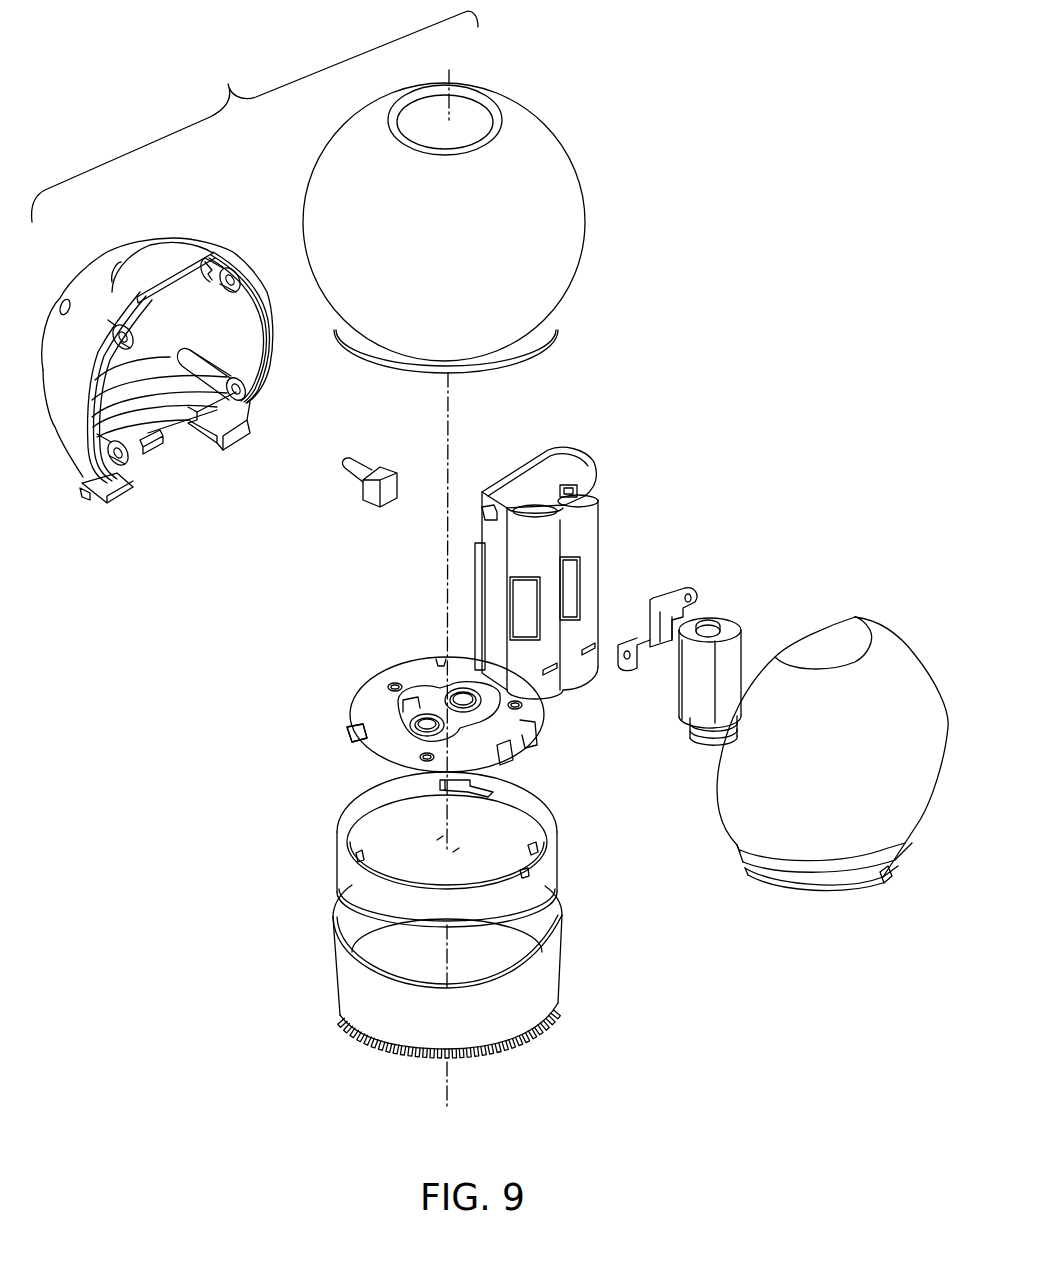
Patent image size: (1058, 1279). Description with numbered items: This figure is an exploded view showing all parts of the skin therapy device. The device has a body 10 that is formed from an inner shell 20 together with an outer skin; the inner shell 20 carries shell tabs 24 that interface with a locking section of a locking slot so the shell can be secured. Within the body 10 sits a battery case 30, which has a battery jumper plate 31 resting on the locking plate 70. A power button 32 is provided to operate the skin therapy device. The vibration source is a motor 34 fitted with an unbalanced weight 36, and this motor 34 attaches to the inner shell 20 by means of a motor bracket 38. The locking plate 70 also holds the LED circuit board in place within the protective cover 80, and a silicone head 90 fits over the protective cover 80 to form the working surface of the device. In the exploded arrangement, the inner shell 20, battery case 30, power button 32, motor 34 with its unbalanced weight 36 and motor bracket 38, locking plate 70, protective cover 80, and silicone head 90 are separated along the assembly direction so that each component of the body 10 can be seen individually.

The body 10 is at (228, 84).
The inner shell 20 is at (113, 280).
The shell tabs 24 is at (90, 497).
The battery case 30 is at (572, 460).
The battery jumper plate 31 is at (350, 722).
The power button 32 is at (378, 470).
The motor 34 is at (694, 673).
The unbalanced weight 36 is at (692, 740).
The motor bracket 38 is at (668, 598).
The locking plate 70 is at (522, 720).
The protective cover 80 is at (358, 880).
The silicone head 90 is at (345, 992).